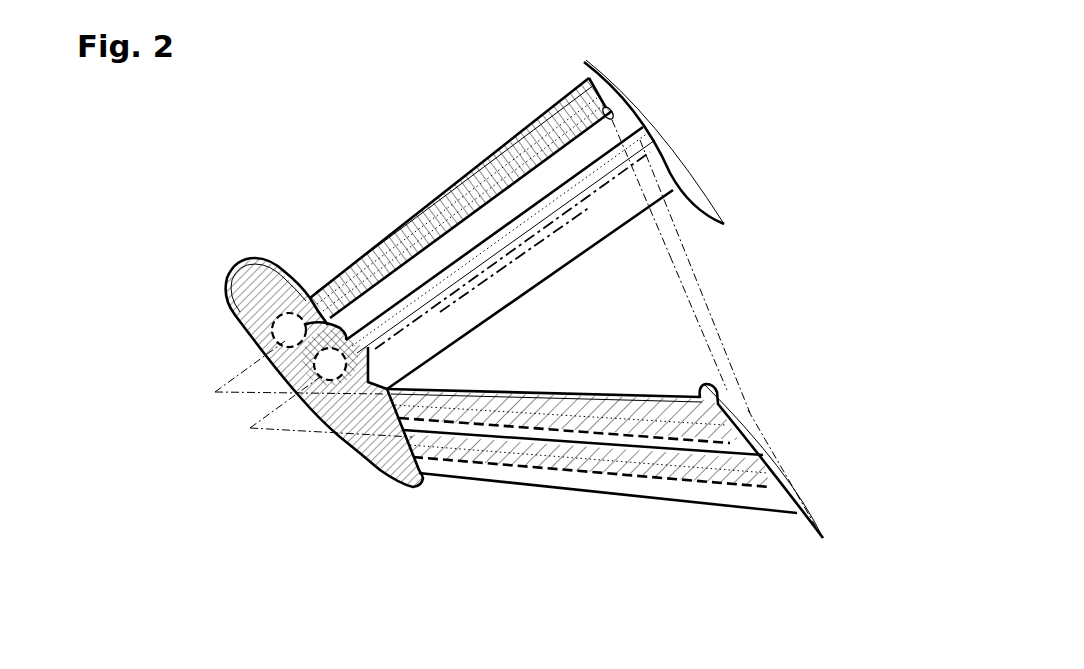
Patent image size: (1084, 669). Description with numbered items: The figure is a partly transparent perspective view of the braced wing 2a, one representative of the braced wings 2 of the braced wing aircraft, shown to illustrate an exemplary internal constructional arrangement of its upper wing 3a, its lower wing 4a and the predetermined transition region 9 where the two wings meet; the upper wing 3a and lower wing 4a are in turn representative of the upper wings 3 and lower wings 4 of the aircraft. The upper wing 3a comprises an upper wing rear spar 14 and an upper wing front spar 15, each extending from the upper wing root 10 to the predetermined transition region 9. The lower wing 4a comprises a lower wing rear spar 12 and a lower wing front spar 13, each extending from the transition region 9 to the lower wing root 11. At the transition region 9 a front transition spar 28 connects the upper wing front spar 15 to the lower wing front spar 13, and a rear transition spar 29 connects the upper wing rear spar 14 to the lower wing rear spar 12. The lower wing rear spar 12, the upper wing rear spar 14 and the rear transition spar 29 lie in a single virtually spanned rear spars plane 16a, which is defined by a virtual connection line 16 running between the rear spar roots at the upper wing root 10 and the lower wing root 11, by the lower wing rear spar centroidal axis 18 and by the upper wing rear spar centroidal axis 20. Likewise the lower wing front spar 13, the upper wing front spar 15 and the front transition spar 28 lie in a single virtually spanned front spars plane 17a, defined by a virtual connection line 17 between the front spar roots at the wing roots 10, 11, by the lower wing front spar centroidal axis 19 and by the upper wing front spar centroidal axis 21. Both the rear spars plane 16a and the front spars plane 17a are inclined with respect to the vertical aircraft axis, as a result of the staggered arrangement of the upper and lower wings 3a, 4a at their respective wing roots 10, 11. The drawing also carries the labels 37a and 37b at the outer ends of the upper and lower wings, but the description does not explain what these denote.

The braced wings 2 is at (350, 160).
The braced wing 2a is at (350, 246).
The upper wings 3 is at (400, 222).
The upper wing 3a is at (497, 156).
The lower wings 4 is at (588, 495).
The lower wing 4a is at (676, 502).
The predetermined transition region 9 is at (293, 272).
The upper wing root 10 is at (585, 62).
The lower wing root 11 is at (769, 447).
The lower wing rear spar 12 is at (497, 473).
The lower wing front spar 13 is at (558, 397).
The upper wing rear spar 14 is at (590, 208).
The upper wing front spar 15 is at (452, 194).
The virtual connection line 16 is at (727, 336).
The virtually spanned rear spars plane 16a is at (746, 379).
The virtual connection line 17 is at (685, 289).
The virtually spanned front spars plane 17a is at (673, 260).
The lower wing rear spar centroidal axis 18 is at (315, 438).
The lower wing front spar centroidal axis 19 is at (233, 399).
The upper wing rear spar centroidal axis 20 is at (287, 415).
The upper wing front spar centroidal axis 21 is at (233, 370).
The front transition spar 28 is at (247, 317).
The rear transition spar 29 is at (348, 442).
The sealing lip 37a is at (647, 104).
The sealing lip 37b is at (800, 479).